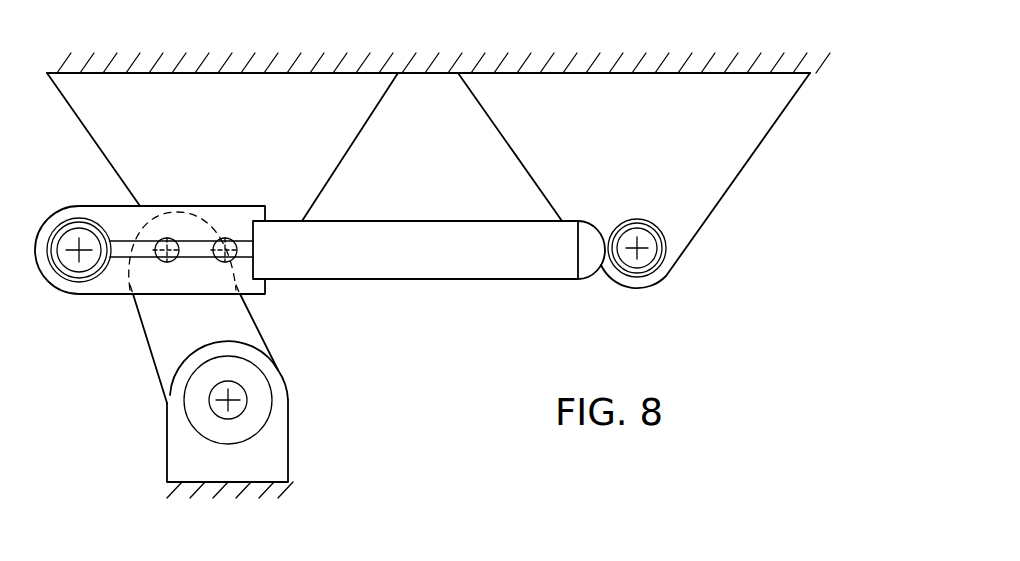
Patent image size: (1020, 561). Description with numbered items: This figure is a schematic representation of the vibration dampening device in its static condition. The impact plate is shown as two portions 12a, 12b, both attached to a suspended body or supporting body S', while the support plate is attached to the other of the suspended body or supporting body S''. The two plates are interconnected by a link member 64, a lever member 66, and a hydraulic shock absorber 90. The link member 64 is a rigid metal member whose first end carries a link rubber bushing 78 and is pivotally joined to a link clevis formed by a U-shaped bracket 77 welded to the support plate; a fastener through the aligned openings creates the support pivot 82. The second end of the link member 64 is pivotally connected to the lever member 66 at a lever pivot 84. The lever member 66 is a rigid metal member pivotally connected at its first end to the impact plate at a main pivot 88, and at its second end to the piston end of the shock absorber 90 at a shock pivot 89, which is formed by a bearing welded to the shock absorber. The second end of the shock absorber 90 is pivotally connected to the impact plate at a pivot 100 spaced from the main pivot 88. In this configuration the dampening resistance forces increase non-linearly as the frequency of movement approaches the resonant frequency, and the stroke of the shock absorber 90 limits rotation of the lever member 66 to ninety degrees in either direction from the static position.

The suspended body or supporting body S' is at (438, 39).
The suspended body or supporting body S'' is at (241, 504).
The impact plate portion 12a is at (340, 160).
The impact plate portion 12b is at (733, 181).
The link member 64 is at (253, 326).
The lever member 66 is at (110, 284).
The U-shaped bracket 77 is at (283, 440).
The link rubber bushing 78 is at (257, 388).
The support pivot 82 is at (234, 398).
The lever pivot 84 is at (168, 247).
The main pivot 88 is at (232, 245).
The shock pivot 89 is at (78, 246).
The hydraulic shock absorber 90 is at (503, 270).
The pivot 100 is at (643, 243).